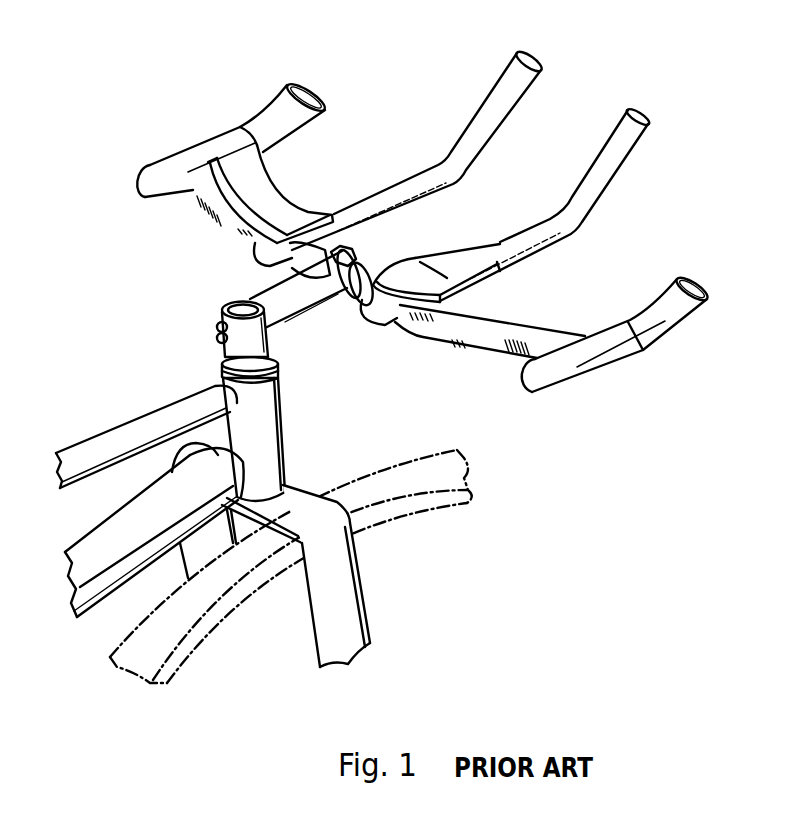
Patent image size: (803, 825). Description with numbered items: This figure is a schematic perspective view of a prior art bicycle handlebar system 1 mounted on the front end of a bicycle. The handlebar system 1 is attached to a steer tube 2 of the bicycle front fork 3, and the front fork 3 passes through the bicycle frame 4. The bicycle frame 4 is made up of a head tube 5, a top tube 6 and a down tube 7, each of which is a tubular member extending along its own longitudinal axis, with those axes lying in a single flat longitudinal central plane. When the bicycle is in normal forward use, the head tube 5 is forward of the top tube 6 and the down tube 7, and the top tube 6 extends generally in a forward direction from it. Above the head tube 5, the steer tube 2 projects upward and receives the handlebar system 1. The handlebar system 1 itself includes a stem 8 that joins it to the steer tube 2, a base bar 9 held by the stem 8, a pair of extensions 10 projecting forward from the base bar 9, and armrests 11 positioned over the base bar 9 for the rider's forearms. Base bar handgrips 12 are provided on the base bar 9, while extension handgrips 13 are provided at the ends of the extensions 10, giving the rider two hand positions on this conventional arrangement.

The handlebar system 1 is at (172, 118).
The steer tube 2 is at (240, 352).
The bicycle front fork 3 is at (307, 496).
The bicycle frame 4 is at (105, 408).
The head tube 5 is at (268, 425).
The top tube 6 is at (93, 455).
The down tube 7 is at (95, 548).
The stem 8 is at (303, 312).
The base bar 9 is at (220, 223).
The extensions 10 is at (437, 170).
The armrests 11 is at (292, 208).
The base bar handgrips 12 is at (512, 78).
The extension handgrips 13 is at (266, 116).